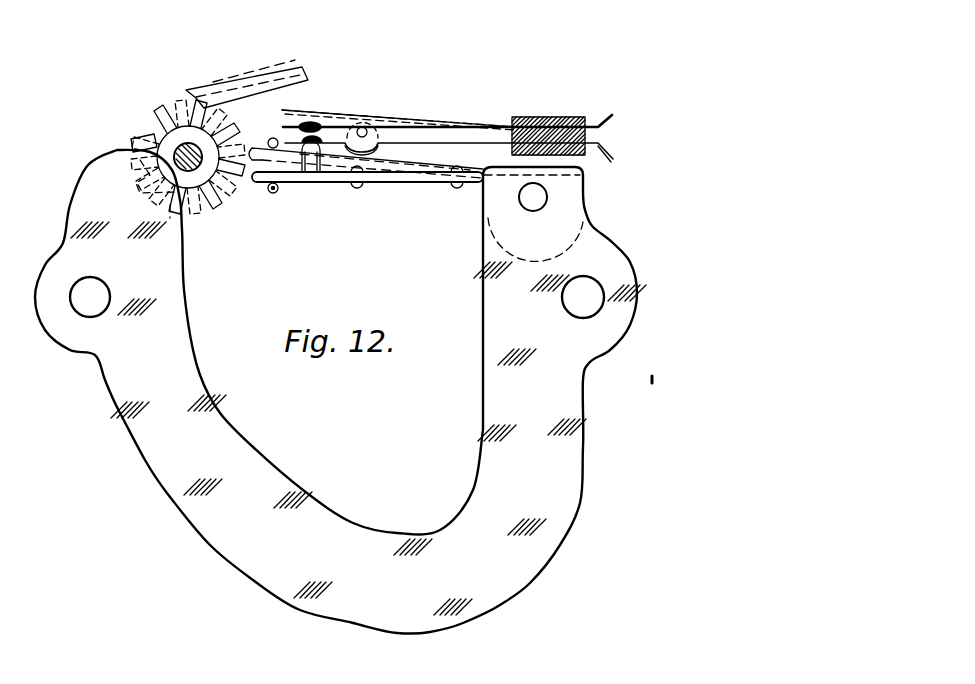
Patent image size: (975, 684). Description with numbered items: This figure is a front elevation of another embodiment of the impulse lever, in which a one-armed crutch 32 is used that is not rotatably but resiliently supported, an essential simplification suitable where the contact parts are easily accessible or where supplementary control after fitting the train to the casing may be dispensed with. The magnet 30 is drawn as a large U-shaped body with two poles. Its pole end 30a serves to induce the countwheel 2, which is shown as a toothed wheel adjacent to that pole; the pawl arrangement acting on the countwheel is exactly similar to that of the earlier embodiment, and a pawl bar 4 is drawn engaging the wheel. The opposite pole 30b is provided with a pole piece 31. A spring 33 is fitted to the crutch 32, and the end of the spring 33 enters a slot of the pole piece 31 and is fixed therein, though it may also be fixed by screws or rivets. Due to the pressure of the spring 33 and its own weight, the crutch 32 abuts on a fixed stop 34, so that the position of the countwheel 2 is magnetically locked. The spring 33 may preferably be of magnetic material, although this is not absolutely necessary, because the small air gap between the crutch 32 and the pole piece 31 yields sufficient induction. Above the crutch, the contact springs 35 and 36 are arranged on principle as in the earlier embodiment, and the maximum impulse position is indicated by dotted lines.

The countwheel 2 is at (161, 109).
The pawl bar 4 is at (247, 95).
The magnet 30 is at (190, 493).
The pole end 30a is at (113, 180).
The opposite pole 30b is at (568, 248).
The pole piece 31 is at (503, 200).
The crutch 32 is at (335, 176).
The spring 33 is at (398, 181).
The fixed stop 34 is at (270, 192).
The contact spring 35 is at (337, 123).
The contact spring 36 is at (403, 142).